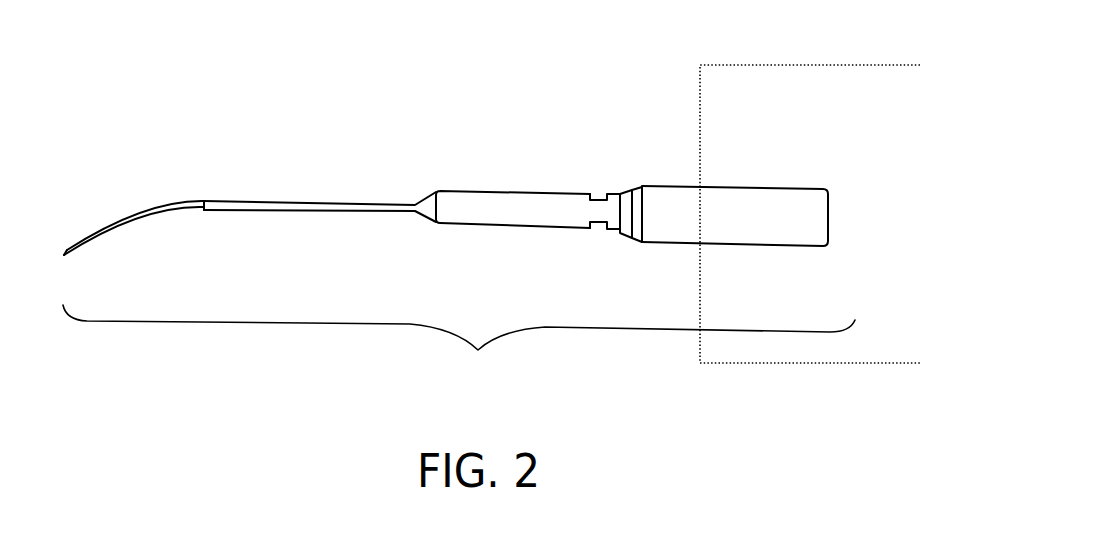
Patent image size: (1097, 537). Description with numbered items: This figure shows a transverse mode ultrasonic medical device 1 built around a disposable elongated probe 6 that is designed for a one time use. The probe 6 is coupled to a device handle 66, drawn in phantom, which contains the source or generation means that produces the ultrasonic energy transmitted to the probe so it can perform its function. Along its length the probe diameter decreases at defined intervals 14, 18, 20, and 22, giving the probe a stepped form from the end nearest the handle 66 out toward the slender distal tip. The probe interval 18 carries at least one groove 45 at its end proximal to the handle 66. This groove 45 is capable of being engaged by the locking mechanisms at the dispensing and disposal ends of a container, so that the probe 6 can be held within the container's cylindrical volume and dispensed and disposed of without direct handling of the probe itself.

The transverse mode ultrasonic medical device 1 is at (682, 52).
The disposable elongated probe 6 is at (459, 344).
The probe interval 14 is at (792, 187).
The probe interval 18 is at (523, 190).
The probe interval 20 is at (297, 200).
The probe interval 22 is at (90, 225).
The groove 45 is at (599, 188).
The device handle 66 is at (826, 365).